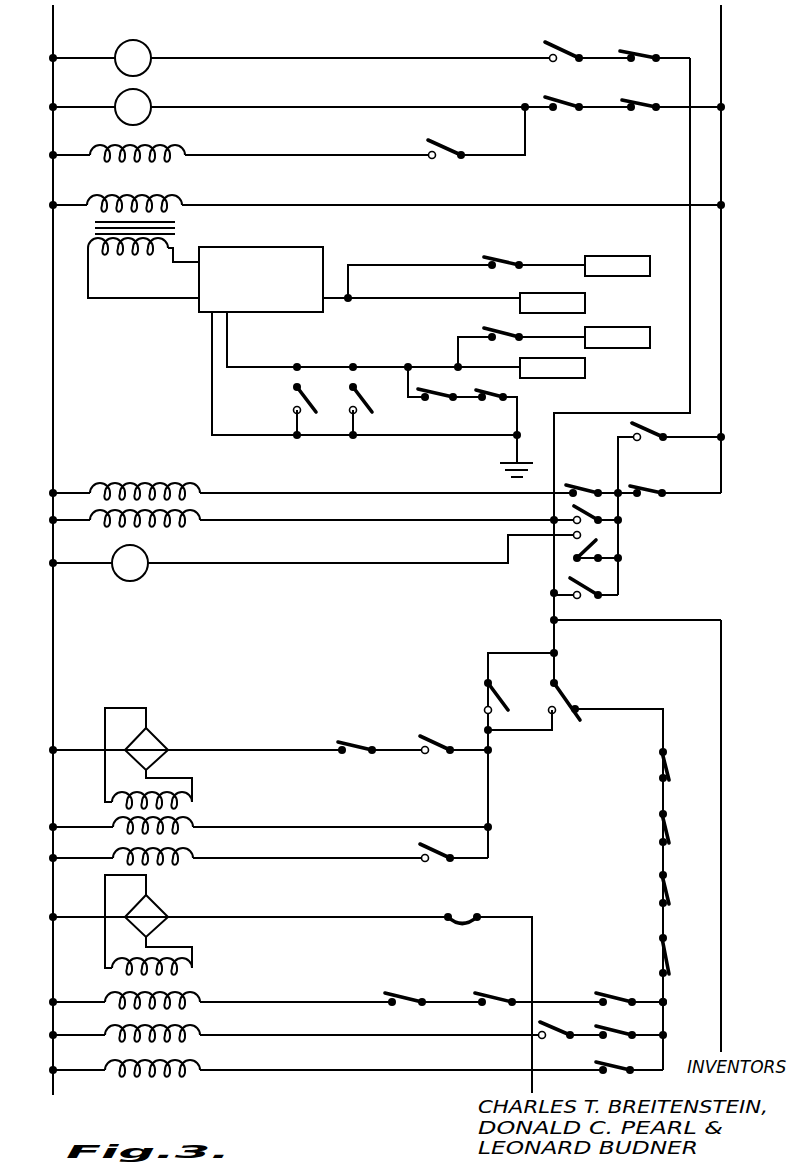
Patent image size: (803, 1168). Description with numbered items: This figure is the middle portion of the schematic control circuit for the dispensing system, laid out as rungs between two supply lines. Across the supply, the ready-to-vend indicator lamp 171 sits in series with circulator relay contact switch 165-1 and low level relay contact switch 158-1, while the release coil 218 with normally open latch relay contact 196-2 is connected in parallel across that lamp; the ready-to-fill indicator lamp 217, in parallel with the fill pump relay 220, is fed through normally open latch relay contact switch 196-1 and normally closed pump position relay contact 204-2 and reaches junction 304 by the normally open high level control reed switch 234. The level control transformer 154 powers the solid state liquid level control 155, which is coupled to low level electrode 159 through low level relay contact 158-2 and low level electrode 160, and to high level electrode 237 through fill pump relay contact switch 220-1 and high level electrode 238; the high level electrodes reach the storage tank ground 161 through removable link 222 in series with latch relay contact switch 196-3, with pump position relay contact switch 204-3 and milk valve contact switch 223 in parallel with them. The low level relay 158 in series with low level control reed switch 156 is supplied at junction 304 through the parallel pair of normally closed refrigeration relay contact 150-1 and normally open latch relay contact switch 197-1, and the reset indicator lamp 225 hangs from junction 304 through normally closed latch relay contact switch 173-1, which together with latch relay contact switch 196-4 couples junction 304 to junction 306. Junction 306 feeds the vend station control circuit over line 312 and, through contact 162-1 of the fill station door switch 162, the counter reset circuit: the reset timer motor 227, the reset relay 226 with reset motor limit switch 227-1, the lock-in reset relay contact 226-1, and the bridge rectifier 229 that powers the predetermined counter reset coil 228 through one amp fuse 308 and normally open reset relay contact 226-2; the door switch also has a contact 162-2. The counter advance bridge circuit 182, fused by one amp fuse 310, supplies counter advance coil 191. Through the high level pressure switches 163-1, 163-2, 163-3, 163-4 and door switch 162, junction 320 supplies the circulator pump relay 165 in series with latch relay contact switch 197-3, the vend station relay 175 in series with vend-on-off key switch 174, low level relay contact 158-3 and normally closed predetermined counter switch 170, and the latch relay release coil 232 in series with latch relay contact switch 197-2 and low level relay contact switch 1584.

The ready-to-fill indicator lamp 217 is at (150, 50).
The ready-to-vend indicator lamp 171 is at (146, 97).
The release coil 218 is at (183, 147).
The level control transformer 154 is at (185, 229).
The solid state liquid level control 155 is at (282, 289).
The normally open latch relay contact switch 196-1 is at (578, 30).
The normally closed pump position relay contact 204-2 is at (644, 54).
The circulator relay contact switch 165-1 is at (566, 100).
The low level relay contact switch 158-1 is at (646, 102).
The normally open latch relay contact 196-2 is at (450, 147).
The low level relay contact 158-2 is at (505, 262).
The low level electrode 159 is at (626, 244).
The low level electrode 160 is at (520, 293).
The fill pump relay contact switch 220-1 is at (500, 332).
The high level electrode 237 is at (633, 327).
The high level electrode 238 is at (585, 369).
The milk valve contact switch 223 is at (306, 398).
The pump position relay contact switch 204-3 is at (362, 402).
The removable link 222 is at (430, 392).
The latch relay contact switch 196-3 is at (492, 394).
The storage tank ground 161 is at (500, 463).
The low level control reed switch 156 is at (591, 472).
The normally open latch relay contact switch 197-1 is at (646, 440).
The junction 304 is at (620, 493).
The normally open high level control reed switch 234 is at (580, 510).
The normally closed refrigeration relay contact 150-1 is at (648, 498).
The latch relay contact switch 173-1 is at (582, 554).
The latch relay contact switch 196-4 is at (594, 598).
The junction 306 is at (552, 620).
The low level relay 158 is at (150, 469).
The fill pump relay 220 is at (196, 513).
The reset indicator lamp 225 is at (140, 578).
The reset relay contact 226-1 is at (486, 686).
The normally open reset relay contact 226-2 is at (440, 744).
The one amp fuse 308 is at (350, 753).
The fill station door switch 162 is at (566, 697).
The contact of door switch 162-1 is at (554, 714).
The contact terminal 162-2 is at (578, 713).
The high level pressure switch 163-1 is at (668, 766).
The high level pressure switch 163-2 is at (668, 829).
The high level pressure switch 163-3 is at (668, 890).
The high level pressure switch 163-4 is at (668, 956).
The bridge rectifier 229 is at (160, 738).
The predetermined counter reset coil 228 is at (190, 792).
The reset timer motor 227 is at (192, 820).
The reset relay 226 is at (196, 851).
The reset motor limit switch 227-1 is at (436, 846).
The bridge circuit 182 is at (160, 905).
The counter advance coil 191 is at (190, 958).
The vend station relay 175 is at (198, 994).
The vend-on-off key switch 174 is at (400, 998).
The low level relay contact 158-3 is at (494, 998).
The normally open latch relay contact switch 197-2 is at (552, 1028).
The normally closed predetermined counter switch 170 is at (614, 998).
The junction 320 is at (667, 1000).
The low level relay contact switch 1584 is at (618, 1030).
The latch relay contact switch 197-3 is at (618, 1060).
The latch relay release coil 232 is at (196, 1028).
The circulator pump relay 165 is at (198, 1062).
The one amp fuse 310 is at (452, 914).
The line 312 is at (721, 915).